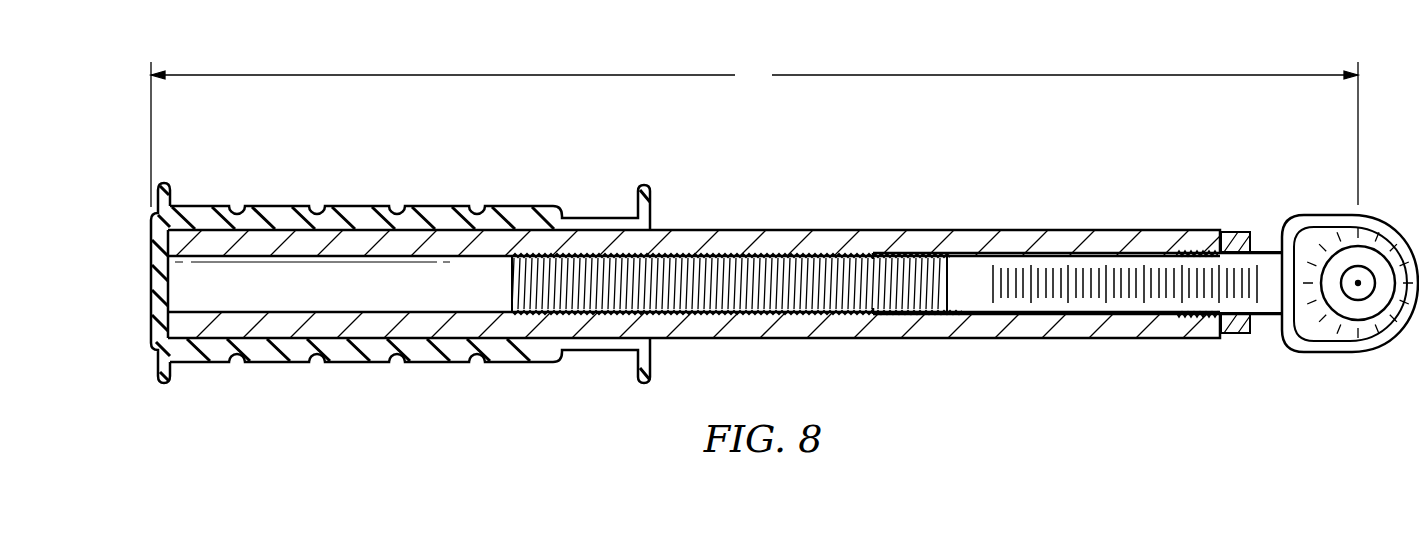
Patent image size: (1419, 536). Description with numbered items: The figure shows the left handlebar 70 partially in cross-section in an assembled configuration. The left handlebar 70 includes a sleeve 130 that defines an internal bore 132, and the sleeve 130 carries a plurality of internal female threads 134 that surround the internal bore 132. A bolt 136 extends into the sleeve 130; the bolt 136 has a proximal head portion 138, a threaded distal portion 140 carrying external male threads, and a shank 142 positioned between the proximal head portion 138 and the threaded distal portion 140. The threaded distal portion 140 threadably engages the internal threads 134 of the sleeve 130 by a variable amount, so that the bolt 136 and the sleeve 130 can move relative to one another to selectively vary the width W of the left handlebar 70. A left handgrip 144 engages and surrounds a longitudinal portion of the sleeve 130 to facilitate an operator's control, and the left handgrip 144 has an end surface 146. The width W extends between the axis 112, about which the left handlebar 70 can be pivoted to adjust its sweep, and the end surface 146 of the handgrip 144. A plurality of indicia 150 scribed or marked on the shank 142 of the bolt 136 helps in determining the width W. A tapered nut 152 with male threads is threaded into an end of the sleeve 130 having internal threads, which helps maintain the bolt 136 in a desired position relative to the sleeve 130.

The left handlebar 70 is at (758, 239).
The axis 112 is at (1356, 281).
The sleeve 130 is at (1030, 230).
The internal bore 132 is at (298, 300).
The internal female threads 134 is at (512, 266).
The bolt 136 is at (1375, 352).
The proximal head portion 138 is at (1322, 352).
The threaded distal portion 140 is at (797, 316).
The shank 142 is at (1262, 318).
The left handgrip 144 is at (348, 206).
The end surface 146 is at (150, 292).
The indicia 150 is at (1120, 308).
The tapered nut 152 is at (1236, 232).